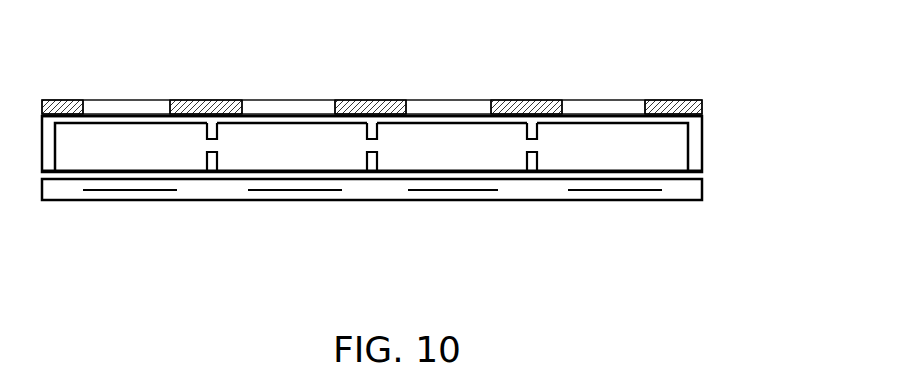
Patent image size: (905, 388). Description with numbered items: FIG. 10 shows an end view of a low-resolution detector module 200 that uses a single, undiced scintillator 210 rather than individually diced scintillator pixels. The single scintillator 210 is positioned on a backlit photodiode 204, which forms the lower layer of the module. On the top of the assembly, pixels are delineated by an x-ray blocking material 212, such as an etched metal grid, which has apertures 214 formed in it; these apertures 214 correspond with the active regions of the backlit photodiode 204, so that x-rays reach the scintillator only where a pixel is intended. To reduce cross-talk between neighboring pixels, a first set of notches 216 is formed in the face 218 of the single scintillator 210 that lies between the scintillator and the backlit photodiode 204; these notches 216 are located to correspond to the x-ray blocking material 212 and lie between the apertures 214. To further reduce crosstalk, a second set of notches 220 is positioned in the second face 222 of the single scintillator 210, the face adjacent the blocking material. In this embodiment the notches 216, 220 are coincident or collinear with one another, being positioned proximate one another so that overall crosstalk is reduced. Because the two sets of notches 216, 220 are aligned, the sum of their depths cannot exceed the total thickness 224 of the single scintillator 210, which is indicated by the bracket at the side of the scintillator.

The detector module 200 is at (722, 91).
The backlit photodiode 204 is at (674, 200).
The single scintillator 210 is at (235, 163).
The x-ray blocking material 212 is at (205, 100).
The apertures 214 is at (112, 97).
The notches 216 is at (212, 173).
The face 218 is at (547, 168).
The second set of notches 220 is at (204, 133).
The second face 222 is at (632, 112).
The total thickness 224 is at (707, 122).